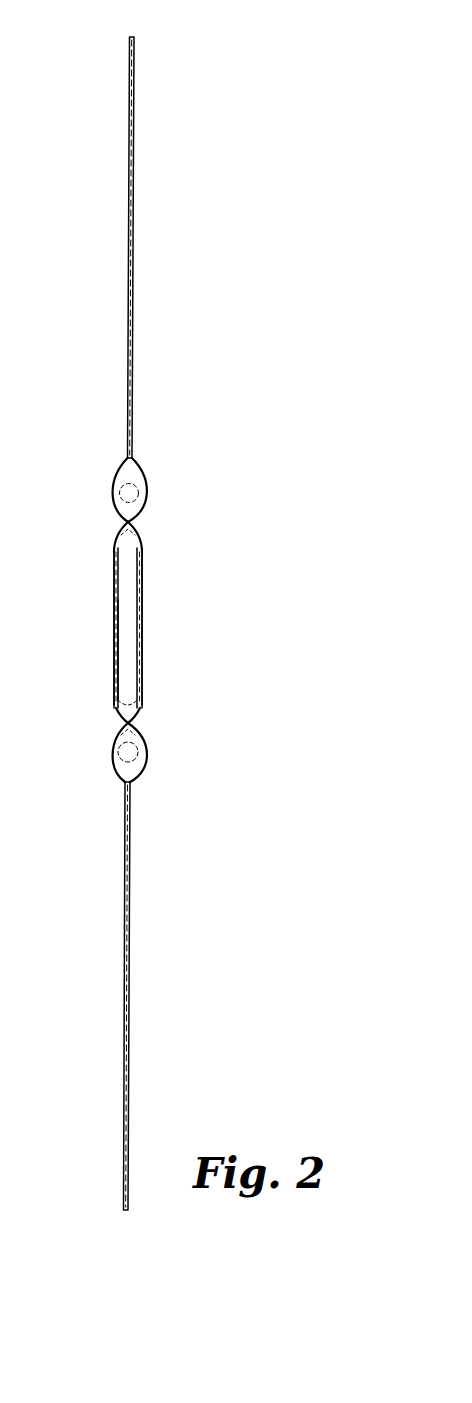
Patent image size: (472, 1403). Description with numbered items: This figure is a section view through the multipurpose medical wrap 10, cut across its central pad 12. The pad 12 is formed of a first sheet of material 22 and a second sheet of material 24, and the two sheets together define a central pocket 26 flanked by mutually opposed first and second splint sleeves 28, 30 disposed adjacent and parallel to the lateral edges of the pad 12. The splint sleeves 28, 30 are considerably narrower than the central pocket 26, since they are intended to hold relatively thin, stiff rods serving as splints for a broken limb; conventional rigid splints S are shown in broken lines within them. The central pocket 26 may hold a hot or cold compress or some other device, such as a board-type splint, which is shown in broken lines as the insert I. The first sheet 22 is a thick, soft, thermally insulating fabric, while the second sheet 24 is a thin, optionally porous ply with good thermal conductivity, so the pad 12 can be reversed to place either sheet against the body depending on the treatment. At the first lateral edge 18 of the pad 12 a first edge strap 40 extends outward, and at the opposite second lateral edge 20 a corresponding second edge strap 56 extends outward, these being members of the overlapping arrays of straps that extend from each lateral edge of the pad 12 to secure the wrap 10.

The multipurpose medical wrap 10 is at (302, 843).
The central pad 12 is at (150, 643).
The first lateral edge 18 is at (121, 778).
The second lateral edge 20 is at (127, 438).
The first sheet of material 22 is at (141, 593).
The second sheet of material 24 is at (116, 582).
The central pocket 26 is at (109, 655).
The first splint sleeve 28 is at (149, 770).
The second splint sleeve 30 is at (146, 477).
The first edge strap 40 is at (122, 1035).
The second edge strap 56 is at (128, 245).
The splint S is at (117, 480).
The insert I is at (135, 527).